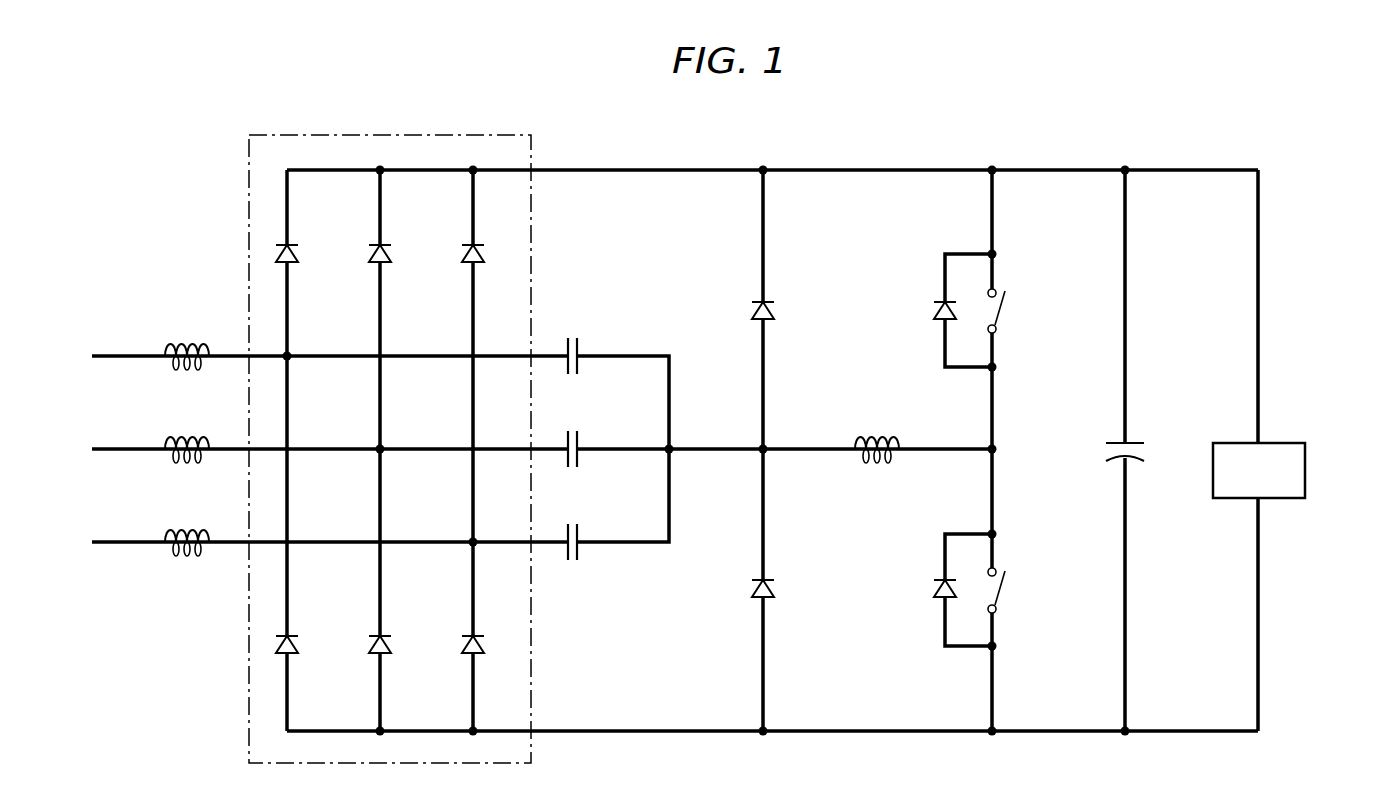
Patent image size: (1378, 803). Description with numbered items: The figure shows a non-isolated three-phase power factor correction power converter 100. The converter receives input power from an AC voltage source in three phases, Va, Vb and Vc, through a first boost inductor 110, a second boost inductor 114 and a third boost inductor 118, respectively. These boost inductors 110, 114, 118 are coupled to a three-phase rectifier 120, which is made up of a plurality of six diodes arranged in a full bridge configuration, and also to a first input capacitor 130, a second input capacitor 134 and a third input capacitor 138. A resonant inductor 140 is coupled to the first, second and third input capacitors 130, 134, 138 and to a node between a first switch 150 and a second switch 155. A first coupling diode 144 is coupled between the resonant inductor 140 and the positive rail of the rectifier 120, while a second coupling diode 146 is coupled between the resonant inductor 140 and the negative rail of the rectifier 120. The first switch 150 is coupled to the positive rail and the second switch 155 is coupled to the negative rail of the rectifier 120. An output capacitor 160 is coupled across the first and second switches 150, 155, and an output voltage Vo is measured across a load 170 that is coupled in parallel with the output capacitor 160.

The power converter 100 is at (122, 138).
The first boost inductor 110 is at (189, 341).
The second boost inductor 114 is at (189, 434).
The third boost inductor 118 is at (189, 527).
The three-phase rectifier 120 is at (249, 170).
The first input capacitor 130 is at (580, 347).
The second input capacitor 134 is at (580, 440).
The third input capacitor 138 is at (580, 533).
The resonant inductor 140 is at (878, 436).
The first coupling diode 144 is at (752, 313).
The second coupling diode 146 is at (752, 591).
The first switch 150 is at (934, 313).
The second switch 155 is at (934, 591).
The output capacitor 160 is at (1112, 441).
The load 170 is at (1212, 478).